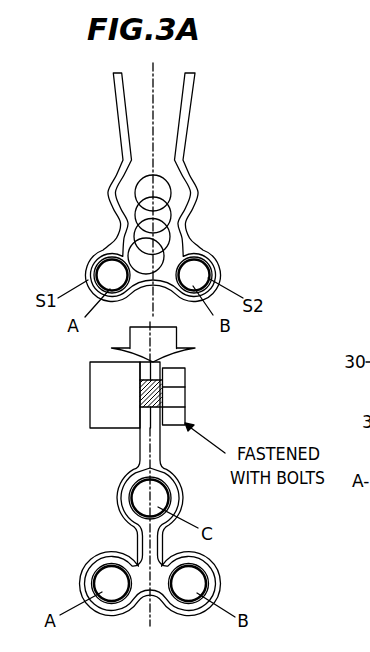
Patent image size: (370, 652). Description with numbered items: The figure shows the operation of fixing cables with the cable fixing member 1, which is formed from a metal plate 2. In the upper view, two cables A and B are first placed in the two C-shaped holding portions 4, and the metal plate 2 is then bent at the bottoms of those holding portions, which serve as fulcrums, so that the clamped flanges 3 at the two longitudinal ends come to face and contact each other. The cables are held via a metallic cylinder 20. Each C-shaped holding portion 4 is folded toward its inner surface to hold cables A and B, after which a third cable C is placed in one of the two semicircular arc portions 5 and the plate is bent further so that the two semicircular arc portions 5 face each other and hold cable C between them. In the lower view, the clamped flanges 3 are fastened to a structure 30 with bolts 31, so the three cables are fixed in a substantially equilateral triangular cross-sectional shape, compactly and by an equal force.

The cable fixing member 1 is at (96, 133).
The metal plate 2 is at (140, 446).
The clamped flanges 3 is at (161, 362).
The C-shaped holding portions 4 is at (208, 280).
The semicircular arc portions 5 is at (195, 200).
The metallic cylinder 20 is at (112, 287).
The structure 30 is at (90, 398).
The bolts 31 is at (185, 388).